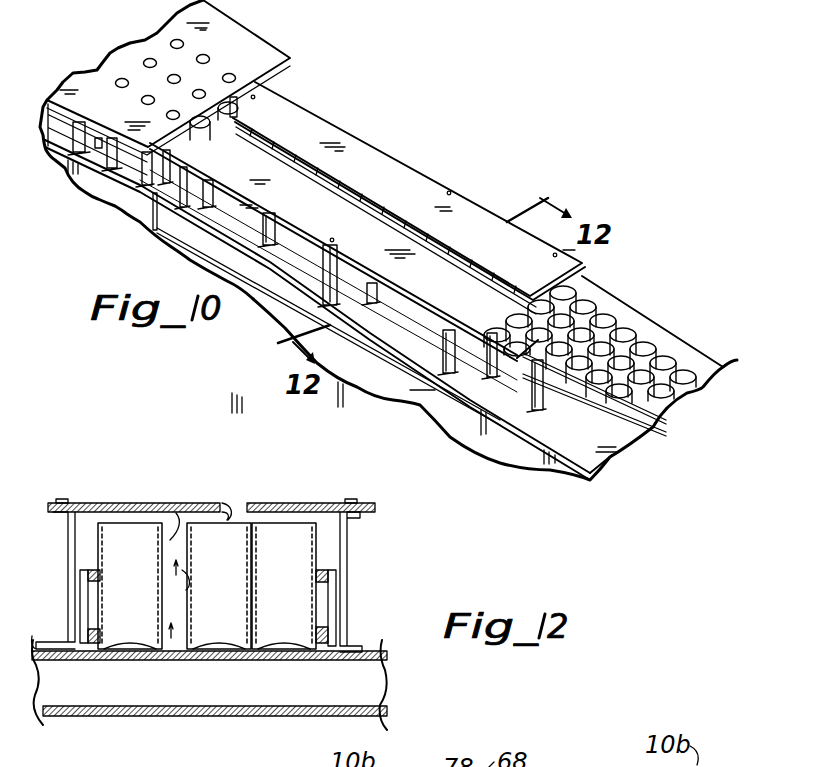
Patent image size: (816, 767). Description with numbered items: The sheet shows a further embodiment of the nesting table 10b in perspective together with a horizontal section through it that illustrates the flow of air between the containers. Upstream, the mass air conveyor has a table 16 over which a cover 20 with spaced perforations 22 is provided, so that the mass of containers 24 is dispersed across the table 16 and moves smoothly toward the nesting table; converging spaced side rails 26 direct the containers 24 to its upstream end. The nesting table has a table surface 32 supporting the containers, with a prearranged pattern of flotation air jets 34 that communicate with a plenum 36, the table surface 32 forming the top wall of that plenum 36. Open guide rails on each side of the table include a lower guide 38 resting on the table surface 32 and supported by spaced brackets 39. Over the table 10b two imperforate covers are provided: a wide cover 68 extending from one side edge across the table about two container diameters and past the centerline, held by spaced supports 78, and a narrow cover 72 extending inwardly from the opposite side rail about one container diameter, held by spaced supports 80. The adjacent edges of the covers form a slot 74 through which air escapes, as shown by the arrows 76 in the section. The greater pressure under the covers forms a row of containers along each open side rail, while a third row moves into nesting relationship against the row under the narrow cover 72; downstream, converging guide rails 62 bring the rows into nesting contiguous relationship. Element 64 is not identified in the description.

In FIG. 10, the nesting table 10b is at (175, 266).
In FIG. 10, the table 16 is at (68, 182).
In FIG. 10, the cover 20 is at (213, 30).
In FIG. 10, the perforations 22 is at (206, 60).
In FIG. 10, the containers 24 is at (203, 125).
In FIG. 12, the containers 24 is at (140, 612).
In FIG. 10, the side rails 26 is at (103, 185).
In FIG. 10, the table surface 32 is at (290, 287).
In FIG. 12, the flotation air jets 34 is at (275, 662).
In FIG. 10, the plenum 36 is at (258, 286).
In FIG. 12, the plenum 36 is at (170, 718).
In FIG. 10, the lower guide 38 is at (270, 216).
In FIG. 12, the lower guide 38 is at (97, 578).
In FIG. 10, the brackets 39 is at (288, 240).
In FIG. 12, the brackets 39 is at (82, 593).
In FIG. 10, the converging guide rails 62 is at (598, 470).
In FIG. 10, the guide rails 64 is at (488, 430).
In FIG. 10, the wide cover 68 is at (358, 147).
In FIG. 12, the wide cover 68 is at (115, 502).
In FIG. 10, the narrow cover 72 is at (356, 360).
In FIG. 12, the narrow cover 72 is at (265, 502).
In FIG. 10, the slot 74 is at (355, 191).
In FIG. 12, the slot 74 is at (226, 502).
In FIG. 12, the arrows 76 is at (190, 560).
In FIG. 12, the supports 78 is at (67, 532).
In FIG. 10, the supports 80 is at (150, 227).
In FIG. 12, the supports 80 is at (347, 538).